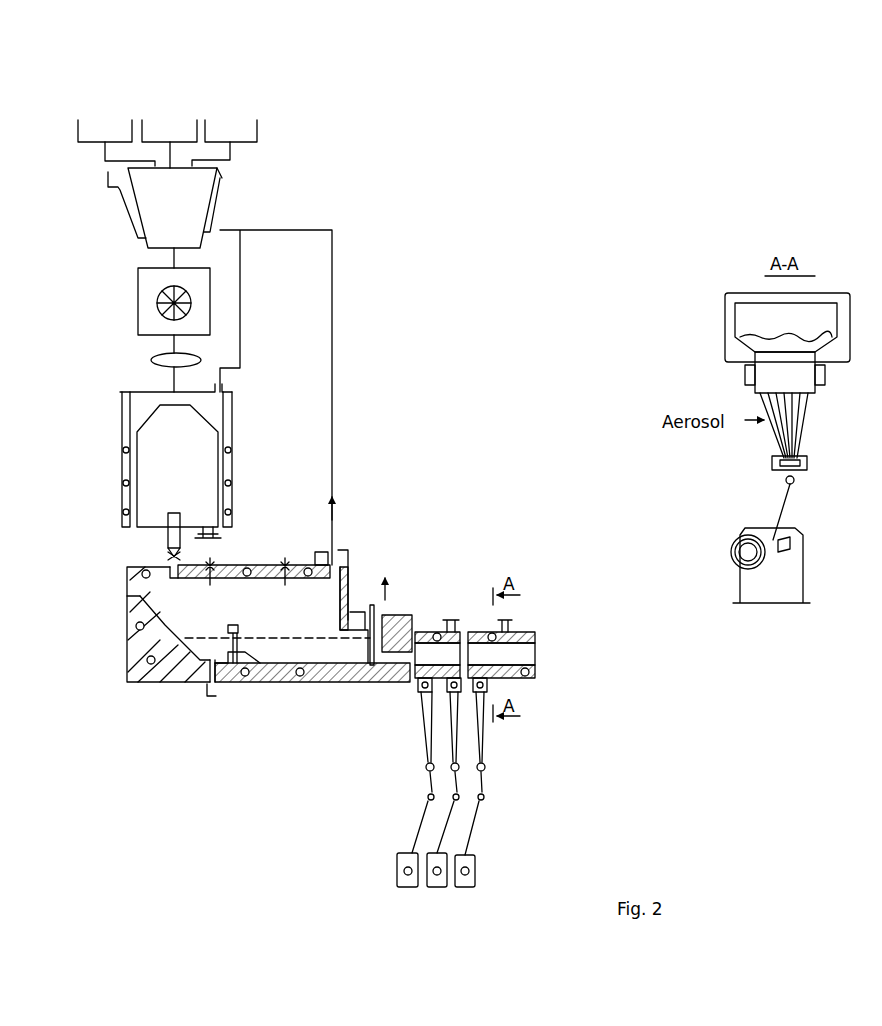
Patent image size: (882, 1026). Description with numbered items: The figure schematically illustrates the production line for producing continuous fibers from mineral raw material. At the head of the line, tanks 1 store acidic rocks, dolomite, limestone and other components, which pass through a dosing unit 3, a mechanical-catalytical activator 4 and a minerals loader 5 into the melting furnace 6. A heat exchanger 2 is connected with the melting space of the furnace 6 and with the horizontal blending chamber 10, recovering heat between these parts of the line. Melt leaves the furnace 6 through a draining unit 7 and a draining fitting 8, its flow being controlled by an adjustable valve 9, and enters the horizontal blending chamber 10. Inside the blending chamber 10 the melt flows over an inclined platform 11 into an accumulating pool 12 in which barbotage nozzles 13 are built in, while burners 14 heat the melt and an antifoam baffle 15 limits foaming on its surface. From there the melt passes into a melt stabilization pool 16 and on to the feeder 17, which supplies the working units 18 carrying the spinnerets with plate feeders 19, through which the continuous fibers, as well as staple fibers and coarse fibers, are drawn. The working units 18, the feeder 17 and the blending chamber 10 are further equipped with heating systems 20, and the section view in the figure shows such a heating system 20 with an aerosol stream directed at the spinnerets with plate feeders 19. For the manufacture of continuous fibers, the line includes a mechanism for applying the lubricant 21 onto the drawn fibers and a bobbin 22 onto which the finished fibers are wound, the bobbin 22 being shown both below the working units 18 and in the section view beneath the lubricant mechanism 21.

The tanks 1 is at (167, 143).
The heat exchanger 2 is at (225, 188).
The dosing unit 3 is at (147, 197).
The mechanical-catalytical activator 4 is at (143, 295).
The minerals loader 5 is at (152, 363).
The melting furnace 6 is at (145, 450).
The draining unit 7 is at (165, 538).
The draining fitting 8 is at (220, 527).
The adjustable valve 9 is at (167, 556).
The horizontal blending chamber 10 is at (150, 596).
The inclined platform 11 is at (158, 633).
The accumulating pool 12 is at (178, 684).
The barbotage nozzles 13 is at (207, 692).
The burners 14 is at (218, 563).
The antifoam baffle 15 is at (235, 684).
The melt stabilization pool 16 is at (340, 662).
The feeder 17 is at (430, 648).
The working units 18 is at (490, 660).
The spinnerets with plate feeders 19 is at (815, 405).
The heating systems 20 is at (440, 632).
The mechanism for applying the lubricant 21 is at (810, 470).
The bobbin 22 is at (397, 853).